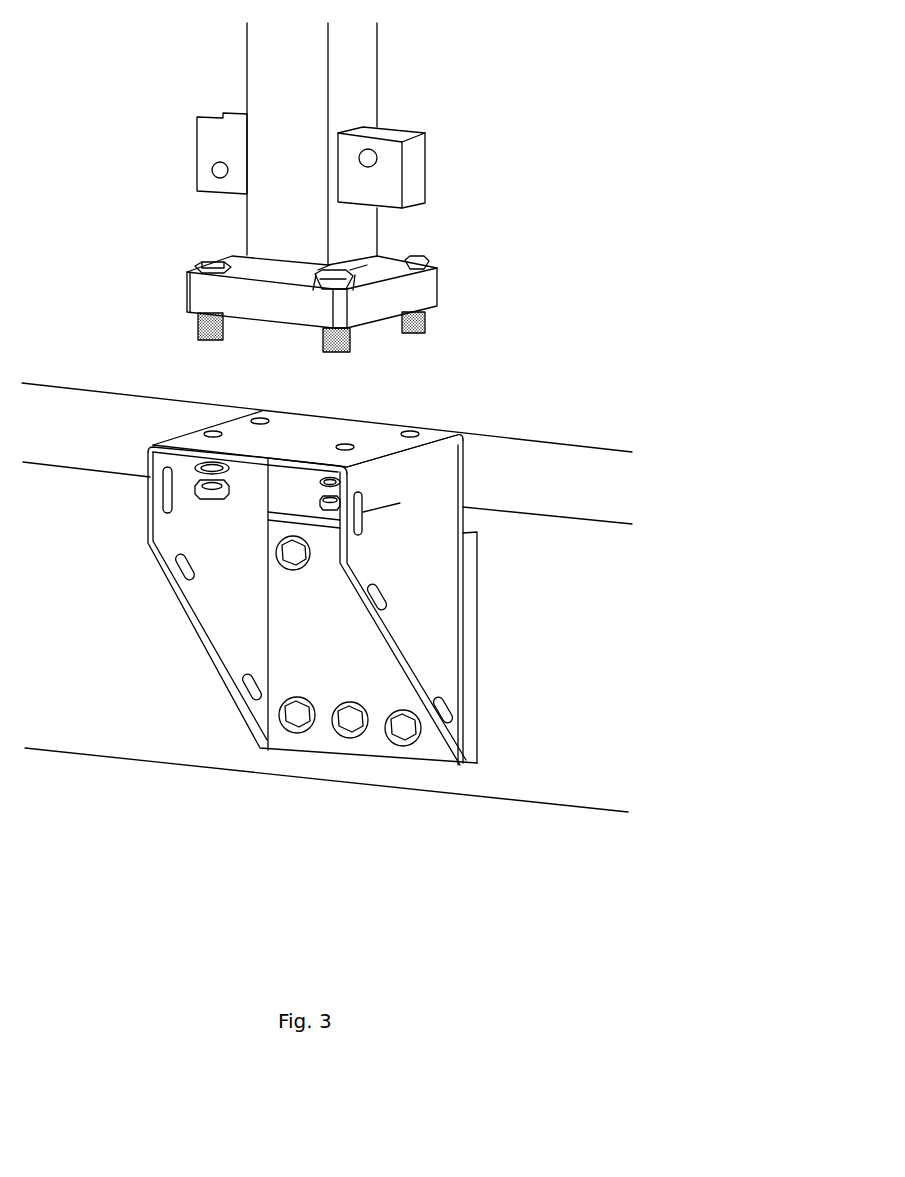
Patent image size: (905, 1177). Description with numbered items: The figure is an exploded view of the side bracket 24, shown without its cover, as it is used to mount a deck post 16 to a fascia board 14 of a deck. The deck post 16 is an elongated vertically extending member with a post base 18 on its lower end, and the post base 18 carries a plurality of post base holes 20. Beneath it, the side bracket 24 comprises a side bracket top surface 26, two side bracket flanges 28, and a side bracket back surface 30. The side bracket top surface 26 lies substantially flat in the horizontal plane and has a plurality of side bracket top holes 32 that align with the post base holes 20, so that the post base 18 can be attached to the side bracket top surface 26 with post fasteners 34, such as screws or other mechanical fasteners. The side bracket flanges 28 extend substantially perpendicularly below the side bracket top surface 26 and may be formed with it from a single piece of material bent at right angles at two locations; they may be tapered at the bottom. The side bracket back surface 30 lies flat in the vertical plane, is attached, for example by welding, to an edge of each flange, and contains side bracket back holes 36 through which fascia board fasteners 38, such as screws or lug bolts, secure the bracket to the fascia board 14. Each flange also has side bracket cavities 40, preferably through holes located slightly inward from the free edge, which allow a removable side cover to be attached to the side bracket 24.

The fascia board 14 is at (573, 772).
The deck post 16 is at (360, 78).
The post base 18 is at (430, 297).
The post base holes 20 is at (423, 262).
The side bracket 24 is at (478, 650).
The side bracket top surface 26 is at (340, 432).
The side bracket flanges 28 is at (207, 612).
The side bracket back surface 30 is at (313, 738).
The side bracket top holes 32 is at (262, 422).
The post fasteners 34 is at (198, 330).
The side bracket back holes 36 is at (360, 742).
The fascia board fasteners 38 is at (298, 712).
The side bracket cavities 40 is at (167, 493).